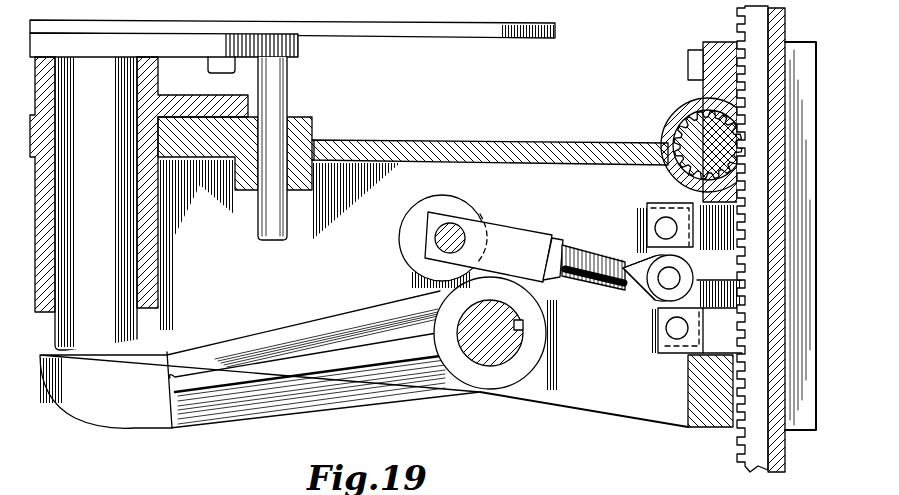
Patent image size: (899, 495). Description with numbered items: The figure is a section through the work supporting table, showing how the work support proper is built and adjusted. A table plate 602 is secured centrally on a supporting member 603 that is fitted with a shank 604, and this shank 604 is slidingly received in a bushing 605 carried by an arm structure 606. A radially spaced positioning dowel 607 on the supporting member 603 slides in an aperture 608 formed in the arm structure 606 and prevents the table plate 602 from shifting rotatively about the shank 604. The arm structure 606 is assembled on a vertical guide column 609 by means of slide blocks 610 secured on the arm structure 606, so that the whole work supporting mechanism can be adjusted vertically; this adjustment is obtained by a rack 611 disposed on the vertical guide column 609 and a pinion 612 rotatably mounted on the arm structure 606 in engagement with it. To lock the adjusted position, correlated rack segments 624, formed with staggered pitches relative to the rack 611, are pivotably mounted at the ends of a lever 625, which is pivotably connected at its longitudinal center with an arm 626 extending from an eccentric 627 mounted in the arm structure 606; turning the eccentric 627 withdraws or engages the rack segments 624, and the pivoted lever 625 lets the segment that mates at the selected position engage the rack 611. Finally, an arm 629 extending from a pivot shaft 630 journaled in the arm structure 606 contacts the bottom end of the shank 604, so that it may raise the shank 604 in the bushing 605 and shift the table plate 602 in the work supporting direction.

The table plate 602 is at (475, 37).
The supporting member 603 is at (298, 50).
The shank 604 is at (132, 283).
The bushing 605 is at (158, 257).
The arm structure 606 is at (471, 143).
The positioning dowel 607 is at (280, 83).
The aperture 608 is at (313, 192).
The vertical guide column 609 is at (768, 468).
The slide blocks 610 is at (802, 432).
The rack 611 is at (742, 452).
The pinion 612 is at (662, 132).
The rack segments 624 is at (664, 202).
The lever 625 is at (652, 307).
The arm 626 is at (605, 243).
The eccentric 627 is at (457, 230).
The arm 629 is at (192, 418).
The pivot shaft 630 is at (490, 362).